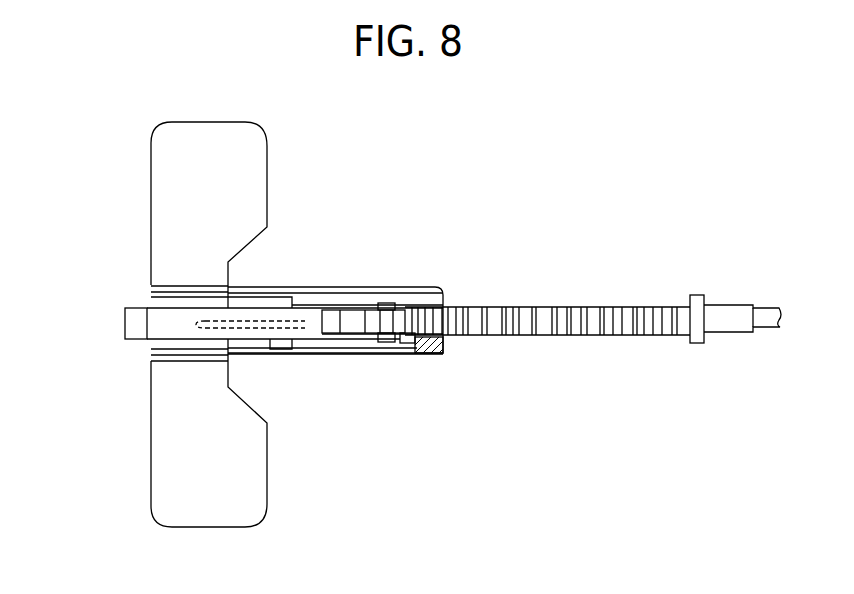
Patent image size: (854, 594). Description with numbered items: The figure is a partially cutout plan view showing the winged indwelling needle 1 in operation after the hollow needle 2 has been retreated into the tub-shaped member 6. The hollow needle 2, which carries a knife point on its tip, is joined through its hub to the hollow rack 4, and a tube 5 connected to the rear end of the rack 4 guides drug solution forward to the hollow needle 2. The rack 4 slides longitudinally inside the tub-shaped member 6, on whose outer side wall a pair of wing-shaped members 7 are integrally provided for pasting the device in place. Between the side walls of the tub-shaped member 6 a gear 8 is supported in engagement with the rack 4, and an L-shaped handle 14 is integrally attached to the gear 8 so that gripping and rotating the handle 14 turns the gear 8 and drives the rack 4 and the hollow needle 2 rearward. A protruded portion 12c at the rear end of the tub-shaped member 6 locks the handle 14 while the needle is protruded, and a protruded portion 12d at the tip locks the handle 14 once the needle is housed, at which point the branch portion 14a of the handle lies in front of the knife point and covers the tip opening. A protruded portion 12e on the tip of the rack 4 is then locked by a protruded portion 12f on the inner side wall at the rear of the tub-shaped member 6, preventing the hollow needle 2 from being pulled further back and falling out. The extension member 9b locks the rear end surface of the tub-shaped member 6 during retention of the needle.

The winged indwelling needle 1 is at (485, 144).
The hollow needle 2 is at (223, 330).
The hollow rack 4 is at (583, 337).
The tube 5 is at (768, 333).
The tub-shaped member 6 is at (293, 355).
The wing-shaped members 7 is at (148, 188).
The gear 8 is at (370, 308).
The extension member 9b is at (697, 295).
The protruded portion 12c is at (437, 287).
The protruded portion 12d is at (278, 308).
The protruded portion 12e is at (415, 348).
The protruded portion 12f is at (437, 352).
The L-shaped handle 14 is at (168, 304).
The branch portion 14a is at (125, 326).